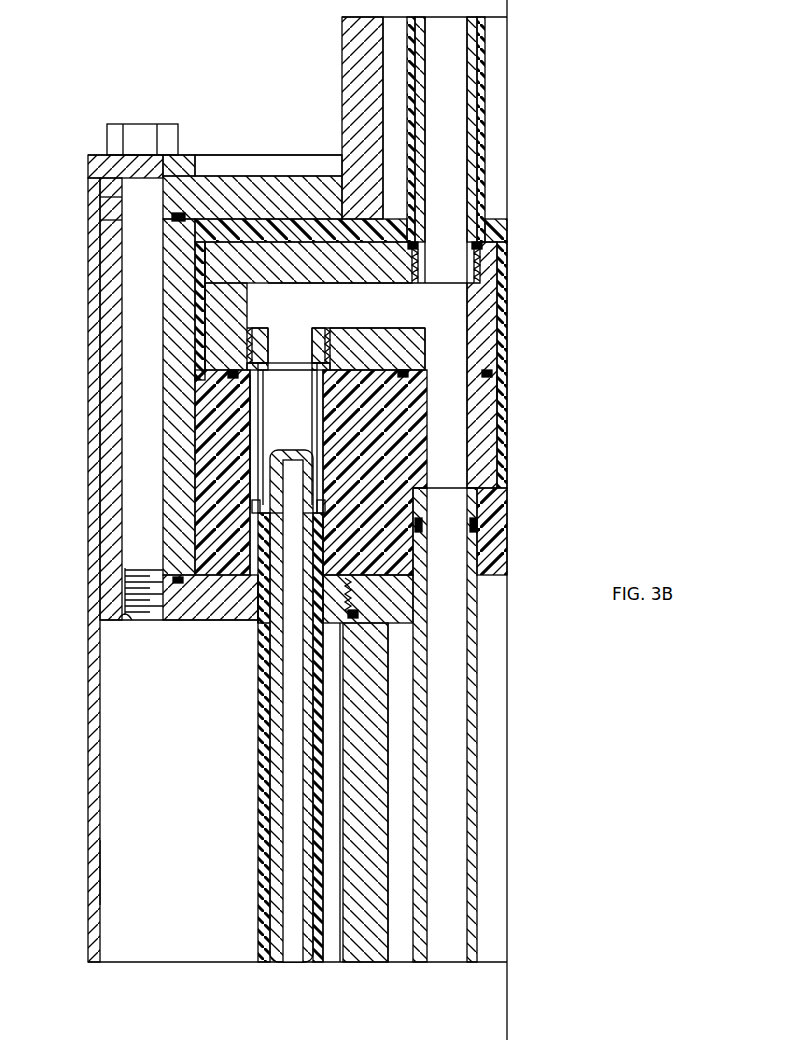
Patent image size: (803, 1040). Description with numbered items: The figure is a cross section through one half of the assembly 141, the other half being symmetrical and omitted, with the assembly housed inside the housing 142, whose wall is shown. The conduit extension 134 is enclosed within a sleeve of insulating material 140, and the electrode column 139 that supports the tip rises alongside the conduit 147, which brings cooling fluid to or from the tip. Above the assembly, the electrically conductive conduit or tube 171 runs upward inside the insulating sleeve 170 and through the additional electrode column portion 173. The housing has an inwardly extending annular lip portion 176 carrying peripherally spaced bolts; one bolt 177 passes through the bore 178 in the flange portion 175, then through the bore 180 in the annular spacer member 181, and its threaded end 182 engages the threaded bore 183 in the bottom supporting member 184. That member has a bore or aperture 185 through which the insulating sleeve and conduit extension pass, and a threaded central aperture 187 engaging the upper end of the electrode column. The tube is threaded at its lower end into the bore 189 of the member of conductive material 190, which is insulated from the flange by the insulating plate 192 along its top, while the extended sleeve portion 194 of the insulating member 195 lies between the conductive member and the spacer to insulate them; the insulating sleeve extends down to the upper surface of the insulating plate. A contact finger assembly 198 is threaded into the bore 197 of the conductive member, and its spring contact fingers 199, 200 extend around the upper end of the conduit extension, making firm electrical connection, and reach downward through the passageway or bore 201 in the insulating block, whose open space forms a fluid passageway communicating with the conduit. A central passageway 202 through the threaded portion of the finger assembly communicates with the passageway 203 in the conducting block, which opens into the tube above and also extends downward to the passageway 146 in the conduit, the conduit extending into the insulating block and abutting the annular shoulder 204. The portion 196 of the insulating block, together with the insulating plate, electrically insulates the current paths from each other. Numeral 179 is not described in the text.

The conduit extension 134 is at (276, 848).
The electrode column 139 is at (387, 870).
The sleeve of insulating material 140 is at (263, 742).
The assembly 141 is at (498, 389).
The housing 142 is at (98, 876).
The passageway 146 is at (457, 683).
The conduit 147 is at (482, 762).
The insulating sleeve 170 is at (486, 86).
The conduit or tube 171 is at (478, 134).
The electrode column portion 173 is at (350, 66).
The flange portion 175 is at (293, 188).
The annular lip portion 176 is at (182, 166).
The bolt 177 is at (147, 128).
The bore 178 is at (116, 167).
The liner joint 179 is at (116, 202).
The bore 180 is at (124, 305).
The annular spacer member 181 is at (98, 380).
The threaded end 182 is at (122, 590).
The threaded bore 183 is at (122, 616).
The bottom supporting member 184 is at (198, 618).
The bore or aperture 185 is at (262, 612).
The threaded central aperture 187 is at (352, 590).
The bore 189 is at (484, 262).
The member of conductive material 190 is at (345, 268).
The insulating plate 192 is at (490, 222).
The extended sleeve portion 194 is at (185, 350).
The insulating member 195 is at (205, 468).
The portion of insulating block 196 is at (500, 301).
The bore 197 is at (340, 330).
The contact finger assembly 198 is at (320, 418).
The spring contact finger 199 is at (258, 508).
The spring contact finger 200 is at (327, 490).
The passageway or bore 201 is at (247, 415).
The central passageway 202 is at (270, 330).
The passageway 203 is at (455, 305).
The annular shoulder 204 is at (477, 490).